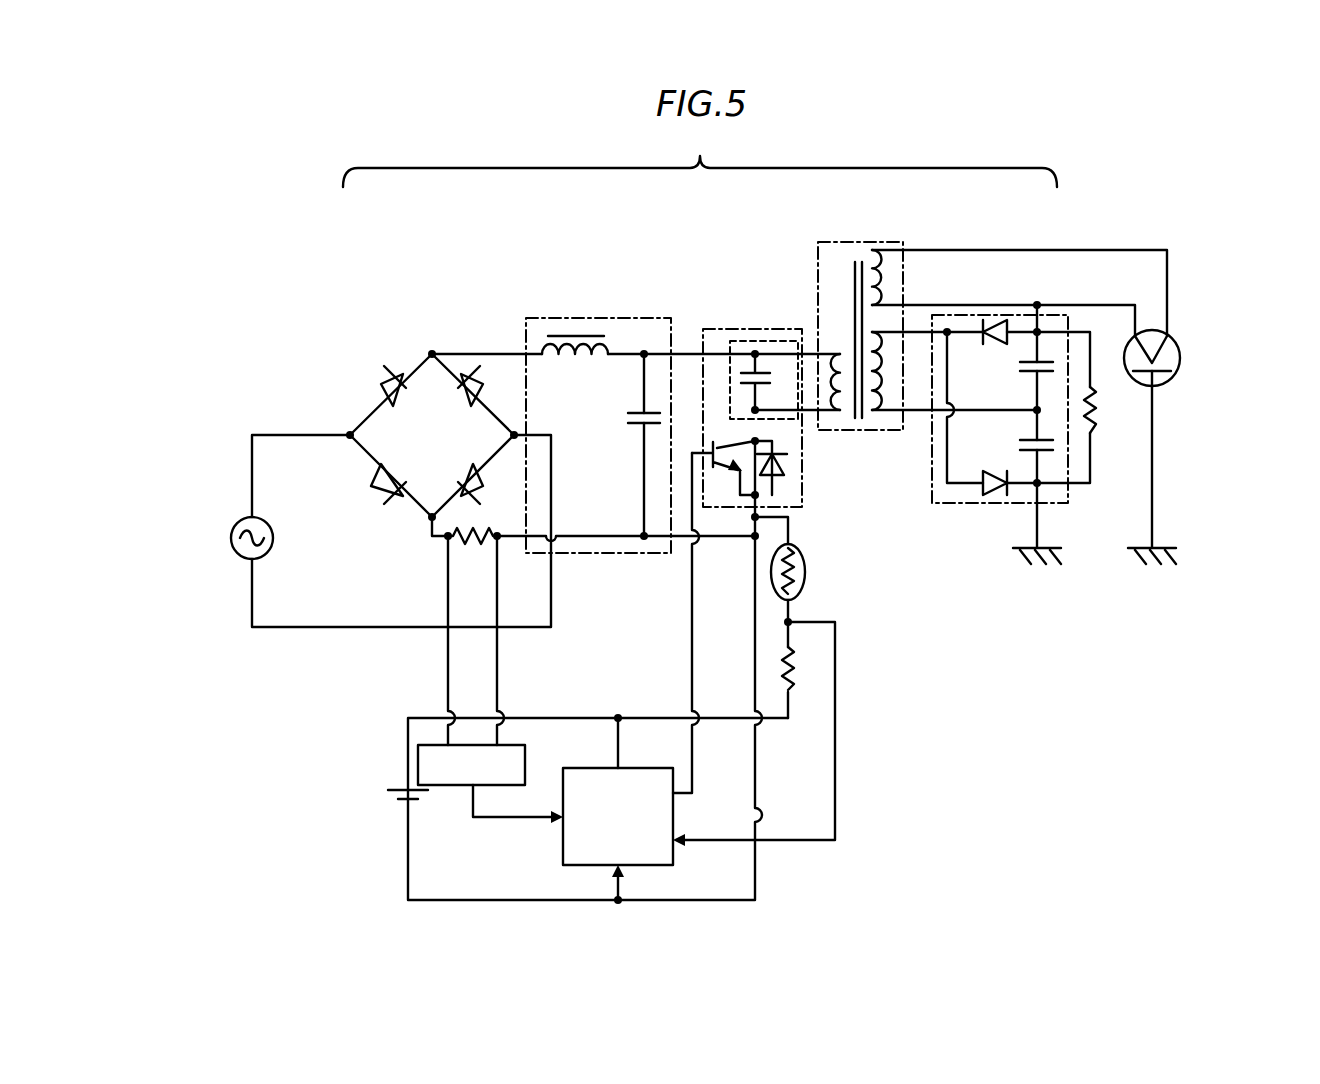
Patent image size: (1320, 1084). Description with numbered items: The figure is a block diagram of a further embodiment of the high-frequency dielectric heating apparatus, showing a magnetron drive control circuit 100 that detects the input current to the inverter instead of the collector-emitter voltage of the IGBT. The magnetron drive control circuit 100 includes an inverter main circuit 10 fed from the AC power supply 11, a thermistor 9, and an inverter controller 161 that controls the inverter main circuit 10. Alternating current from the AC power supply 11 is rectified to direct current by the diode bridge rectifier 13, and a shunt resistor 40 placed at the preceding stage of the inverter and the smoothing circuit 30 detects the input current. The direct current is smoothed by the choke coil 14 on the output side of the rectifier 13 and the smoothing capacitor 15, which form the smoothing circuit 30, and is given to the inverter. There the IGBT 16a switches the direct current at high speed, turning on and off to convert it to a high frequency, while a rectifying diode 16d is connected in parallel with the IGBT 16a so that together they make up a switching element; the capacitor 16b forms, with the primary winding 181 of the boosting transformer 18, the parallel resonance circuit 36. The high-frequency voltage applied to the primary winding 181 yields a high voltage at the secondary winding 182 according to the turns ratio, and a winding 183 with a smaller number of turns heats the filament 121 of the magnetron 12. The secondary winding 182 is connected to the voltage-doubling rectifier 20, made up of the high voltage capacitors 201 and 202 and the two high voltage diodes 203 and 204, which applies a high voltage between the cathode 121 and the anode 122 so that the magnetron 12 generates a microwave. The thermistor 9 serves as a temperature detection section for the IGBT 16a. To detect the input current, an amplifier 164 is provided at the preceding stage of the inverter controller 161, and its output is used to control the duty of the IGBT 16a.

The magnetron drive control circuit 100 is at (222, 348).
The inverter main circuit 10 is at (700, 158).
The AC power supply 11 is at (273, 545).
The rectifier 13 is at (446, 447).
The smoothing circuit 30 is at (540, 318).
The choke coil 14 is at (582, 334).
The smoothing capacitor 15 is at (637, 425).
The shunt resistor 40 is at (478, 541).
The resonance circuit 36 is at (777, 338).
The IGBT 16a is at (711, 448).
The capacitor 16b is at (748, 360).
The rectifying diode 16d is at (787, 462).
The boosting transformer 18 is at (855, 242).
The primary winding 181 is at (826, 372).
The secondary winding 182 is at (890, 392).
The winding 183 is at (893, 285).
The voltage-doubling rectifier 20 is at (945, 505).
The high voltage capacitor 201 is at (1043, 452).
The high voltage capacitor 202 is at (1043, 360).
The high voltage diode 203 is at (995, 344).
The high voltage diode 204 is at (993, 473).
The magnetron 12 is at (1174, 380).
The filament 121 is at (1172, 344).
The anode 122 is at (1170, 372).
The thermistor 9 is at (805, 572).
The inverter controller 161 is at (673, 866).
The amplifier 164 is at (418, 762).